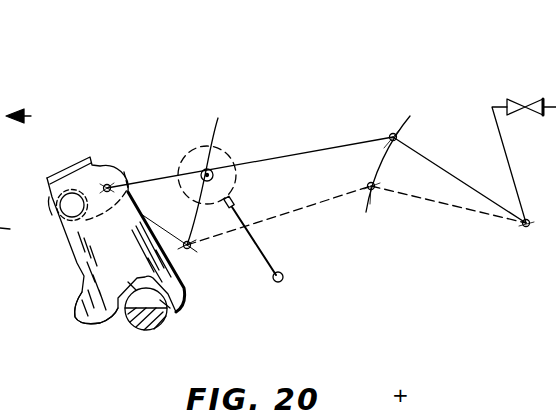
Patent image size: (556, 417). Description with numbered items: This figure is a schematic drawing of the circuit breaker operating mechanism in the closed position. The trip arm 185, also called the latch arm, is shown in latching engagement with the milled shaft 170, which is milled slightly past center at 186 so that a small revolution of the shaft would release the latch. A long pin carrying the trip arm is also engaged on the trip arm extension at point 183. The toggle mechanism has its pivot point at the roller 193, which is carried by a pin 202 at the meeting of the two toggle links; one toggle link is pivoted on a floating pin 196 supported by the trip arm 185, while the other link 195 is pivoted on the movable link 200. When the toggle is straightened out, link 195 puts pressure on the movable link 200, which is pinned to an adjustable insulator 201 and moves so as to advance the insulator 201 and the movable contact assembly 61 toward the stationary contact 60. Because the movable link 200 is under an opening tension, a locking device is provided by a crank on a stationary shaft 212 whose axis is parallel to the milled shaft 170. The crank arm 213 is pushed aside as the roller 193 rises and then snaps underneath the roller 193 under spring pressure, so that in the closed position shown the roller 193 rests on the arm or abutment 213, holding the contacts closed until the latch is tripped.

The stationary contact 60 is at (541, 98).
The movable contact assembly 61 is at (507, 100).
The milled shaft 170 is at (163, 322).
The point 183 is at (48, 192).
The trip arm 185 is at (77, 256).
The milled portion 186 is at (107, 322).
The roller 193 is at (234, 150).
The link 195 is at (348, 144).
The floating pin 196 is at (110, 182).
The movable link 200 is at (441, 166).
The adjustable insulator 201 is at (509, 168).
The pin 202 is at (207, 172).
The shaft 212 is at (283, 276).
The arm 213 is at (257, 243).